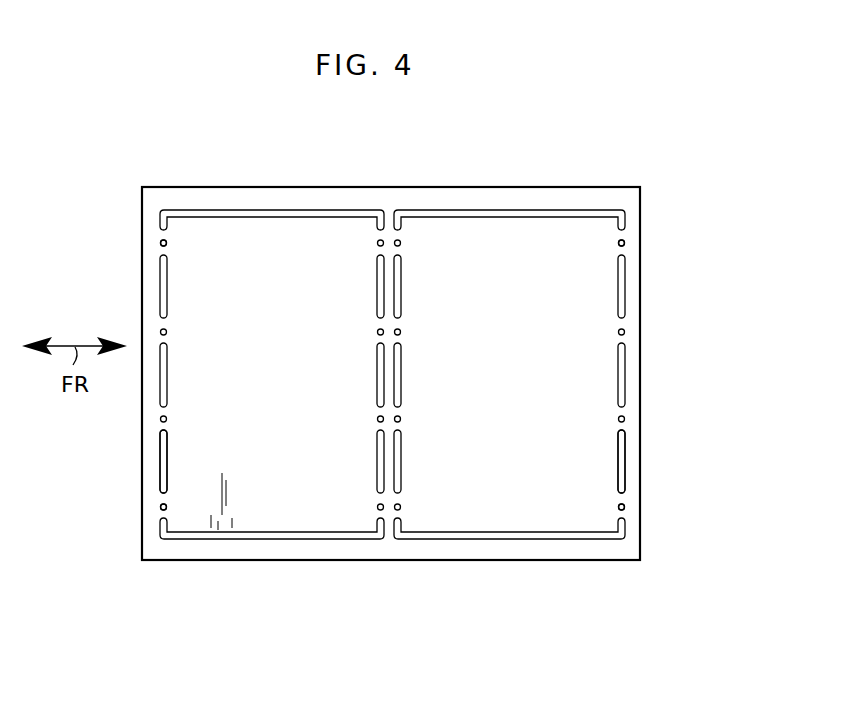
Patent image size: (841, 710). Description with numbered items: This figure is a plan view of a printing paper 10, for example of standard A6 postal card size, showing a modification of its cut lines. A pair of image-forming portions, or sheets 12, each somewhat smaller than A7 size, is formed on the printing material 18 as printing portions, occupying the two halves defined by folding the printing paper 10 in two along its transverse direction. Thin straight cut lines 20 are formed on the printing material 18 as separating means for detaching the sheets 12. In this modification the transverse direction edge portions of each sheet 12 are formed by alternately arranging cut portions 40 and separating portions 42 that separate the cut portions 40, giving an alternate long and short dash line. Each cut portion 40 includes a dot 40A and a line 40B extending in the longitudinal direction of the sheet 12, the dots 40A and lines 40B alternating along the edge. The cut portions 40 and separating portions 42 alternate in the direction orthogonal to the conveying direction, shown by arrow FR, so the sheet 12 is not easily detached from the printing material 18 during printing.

The printing paper 10 is at (581, 181).
The image-forming portion 12 is at (324, 524).
The printing material 18 is at (278, 193).
The cut line 20 is at (255, 537).
The cut portion 40 is at (80, 425).
The dot 40A is at (159, 507).
The line 40B is at (158, 462).
The separating portion 42 is at (159, 246).